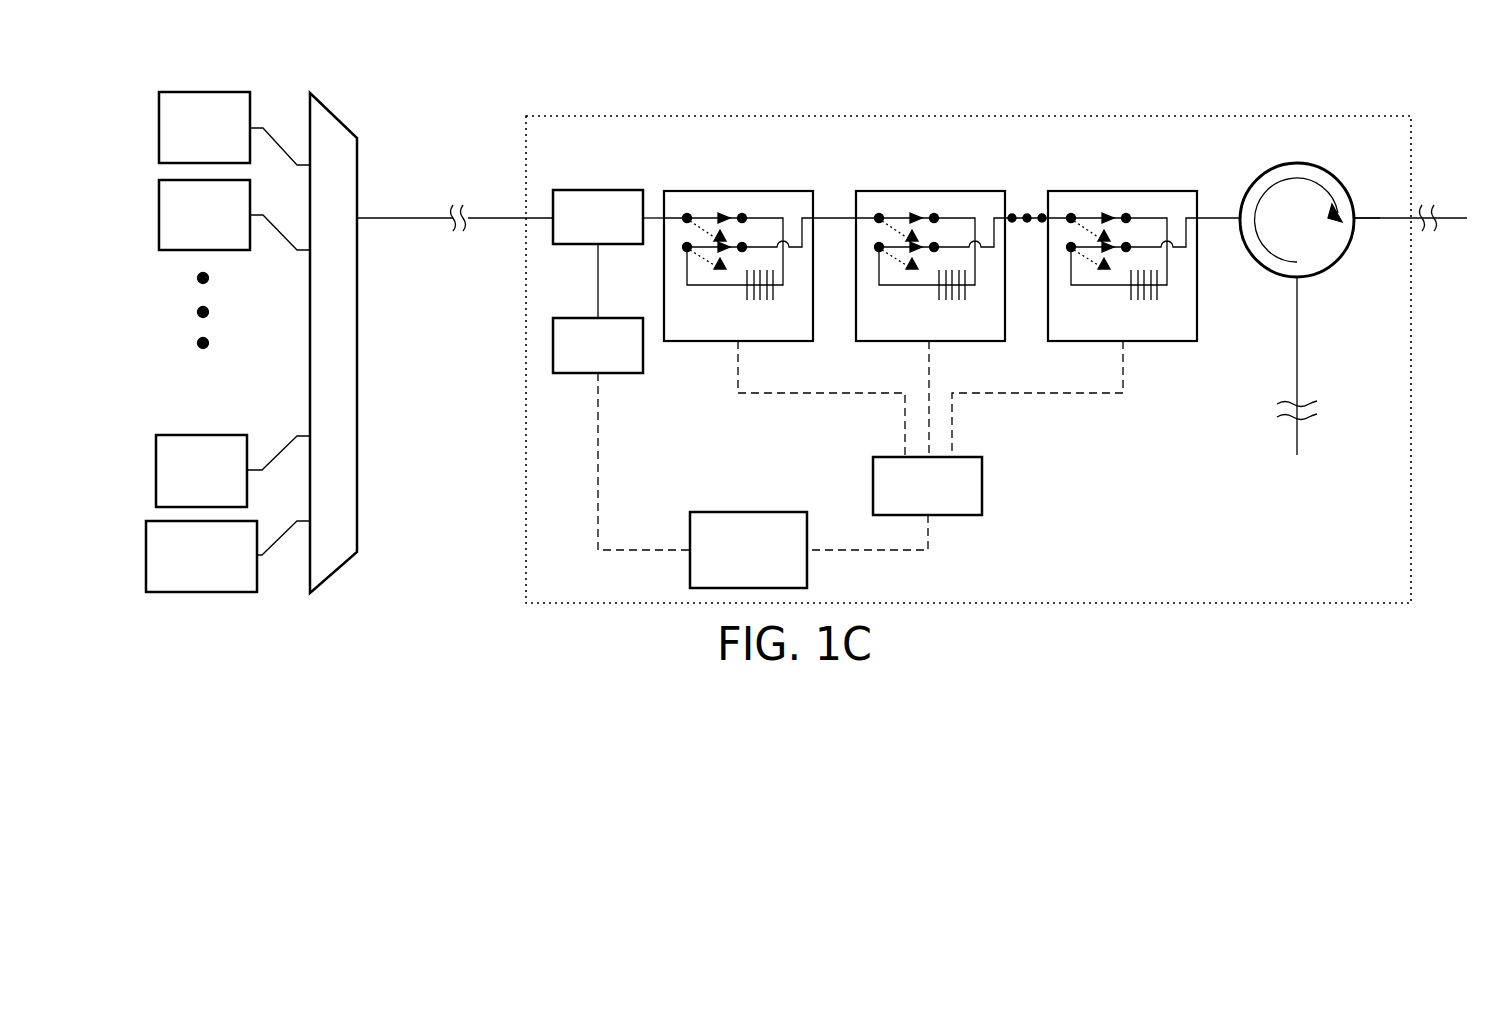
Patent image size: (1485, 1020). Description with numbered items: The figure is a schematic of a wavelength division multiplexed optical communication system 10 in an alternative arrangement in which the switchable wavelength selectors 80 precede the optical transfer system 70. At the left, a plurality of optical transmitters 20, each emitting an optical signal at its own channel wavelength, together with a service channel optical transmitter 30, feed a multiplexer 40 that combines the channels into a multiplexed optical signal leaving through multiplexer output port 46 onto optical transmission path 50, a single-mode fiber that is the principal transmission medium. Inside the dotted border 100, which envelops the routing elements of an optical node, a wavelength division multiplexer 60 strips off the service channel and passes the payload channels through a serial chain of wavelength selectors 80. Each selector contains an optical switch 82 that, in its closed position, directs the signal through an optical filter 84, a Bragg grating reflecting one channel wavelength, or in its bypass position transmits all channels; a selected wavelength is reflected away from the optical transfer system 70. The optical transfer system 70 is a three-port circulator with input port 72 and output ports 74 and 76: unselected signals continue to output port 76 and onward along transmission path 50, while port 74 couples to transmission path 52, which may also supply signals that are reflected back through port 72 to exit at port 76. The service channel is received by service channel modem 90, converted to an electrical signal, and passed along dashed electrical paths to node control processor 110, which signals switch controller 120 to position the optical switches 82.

The WDM optical communication system 10 is at (429, 638).
The optical transmitters 20 is at (218, 103).
The service channel optical transmitter 30 is at (238, 535).
The multiplexer 40 is at (345, 150).
The multiplexer output port 46 is at (362, 214).
The optical transmission path 50 is at (428, 222).
The transfer system output transmission path 52 is at (1295, 432).
The wavelength division multiplexer 60 is at (608, 198).
The optical transfer system 70 is at (1314, 178).
The input port 72 is at (1240, 222).
The output port 74 is at (1295, 290).
The output port 76 is at (1358, 218).
The wavelength selectors 80 is at (763, 191).
The optical switch 82 is at (690, 214).
The optical filter 84 is at (740, 300).
The service channel modem 90 is at (608, 328).
The dotted border 100 is at (949, 112).
The node control processor 110 is at (783, 525).
The switch controller 120 is at (970, 470).